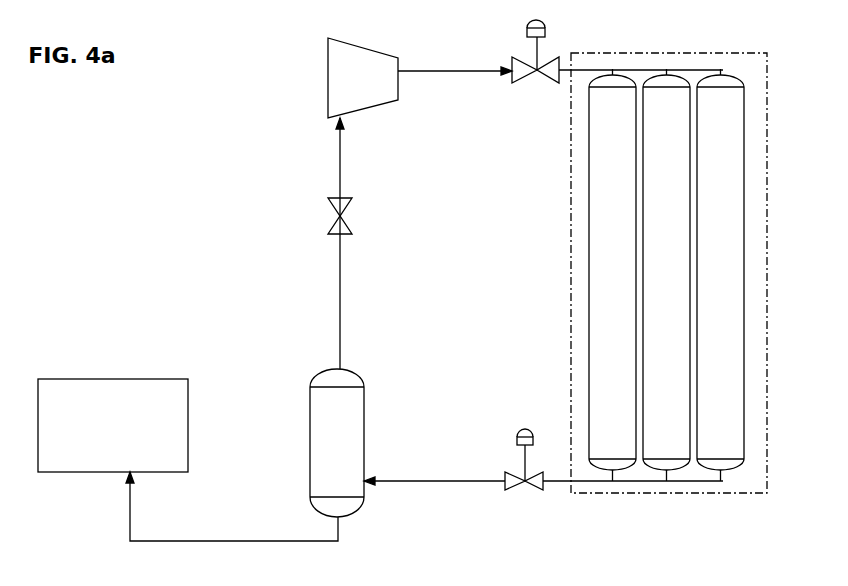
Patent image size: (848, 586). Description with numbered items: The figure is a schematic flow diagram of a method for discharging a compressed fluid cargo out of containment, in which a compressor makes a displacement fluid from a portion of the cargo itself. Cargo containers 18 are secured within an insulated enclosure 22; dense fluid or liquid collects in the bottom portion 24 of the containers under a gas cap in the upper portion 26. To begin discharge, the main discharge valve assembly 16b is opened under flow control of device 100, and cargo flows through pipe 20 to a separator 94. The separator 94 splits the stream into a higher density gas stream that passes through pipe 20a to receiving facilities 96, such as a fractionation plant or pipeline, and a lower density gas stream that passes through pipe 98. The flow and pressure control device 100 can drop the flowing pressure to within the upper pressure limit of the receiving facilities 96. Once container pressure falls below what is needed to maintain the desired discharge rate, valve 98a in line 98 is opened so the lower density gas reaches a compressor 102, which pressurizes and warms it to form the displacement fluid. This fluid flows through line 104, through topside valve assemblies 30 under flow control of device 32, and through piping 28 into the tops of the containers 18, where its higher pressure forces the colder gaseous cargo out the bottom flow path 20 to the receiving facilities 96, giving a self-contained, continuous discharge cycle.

The main discharge valve assembly 16b is at (512, 488).
The cargo containers 18 is at (588, 297).
The pipe 20 is at (555, 483).
The pipe 20a is at (262, 540).
The insulated enclosure 22 is at (767, 422).
The bottom portion 24 is at (625, 431).
The upper portion 26 is at (625, 151).
The piping 28 is at (590, 70).
The topside valve assemblies 30 is at (553, 83).
The flow control device 32 is at (527, 33).
The separator 94 is at (313, 448).
The receiving facilities 96 is at (73, 379).
The pipe 98 is at (337, 292).
The valve 98a is at (328, 230).
The flow and pressure control device 100 is at (517, 432).
The compressor 102 is at (328, 93).
The line 104 is at (463, 75).